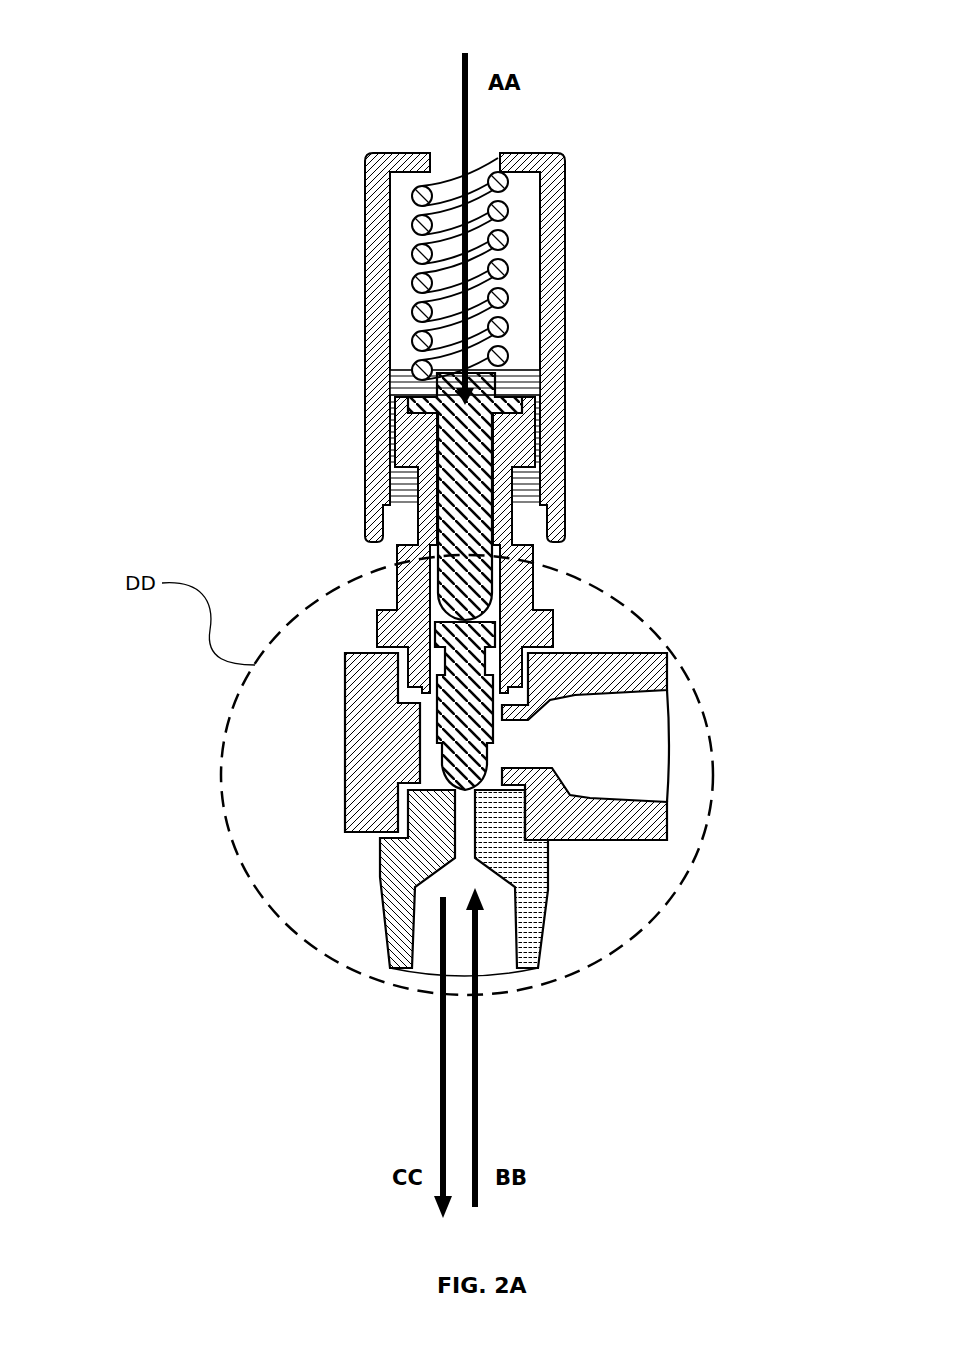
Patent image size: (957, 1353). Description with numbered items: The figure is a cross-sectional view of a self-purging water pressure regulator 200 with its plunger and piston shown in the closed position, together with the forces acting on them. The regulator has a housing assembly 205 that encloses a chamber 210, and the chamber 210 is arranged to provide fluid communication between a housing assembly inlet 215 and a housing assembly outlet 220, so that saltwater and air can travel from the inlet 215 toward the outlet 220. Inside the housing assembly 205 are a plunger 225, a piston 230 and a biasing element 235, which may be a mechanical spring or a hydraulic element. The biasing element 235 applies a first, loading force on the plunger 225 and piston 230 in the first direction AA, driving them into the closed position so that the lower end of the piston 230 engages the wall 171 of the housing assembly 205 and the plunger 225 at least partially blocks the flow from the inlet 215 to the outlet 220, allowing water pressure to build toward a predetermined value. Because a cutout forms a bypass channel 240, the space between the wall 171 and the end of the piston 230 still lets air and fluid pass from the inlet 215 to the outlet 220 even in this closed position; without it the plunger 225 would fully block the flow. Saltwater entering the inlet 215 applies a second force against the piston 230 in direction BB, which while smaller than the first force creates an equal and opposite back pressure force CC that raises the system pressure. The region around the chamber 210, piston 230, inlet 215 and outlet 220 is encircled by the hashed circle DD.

The self-purging water pressure regulator 200 is at (100, 75).
The housing assembly 205 is at (365, 345).
The biasing element 235 is at (518, 184).
The plunger 225 is at (500, 450).
The piston 230 is at (440, 730).
The chamber 210 is at (500, 757).
The housing assembly outlet 220 is at (668, 752).
The wall 171 is at (455, 792).
The bypass channel 240 is at (466, 800).
The housing assembly inlet 215 is at (483, 943).